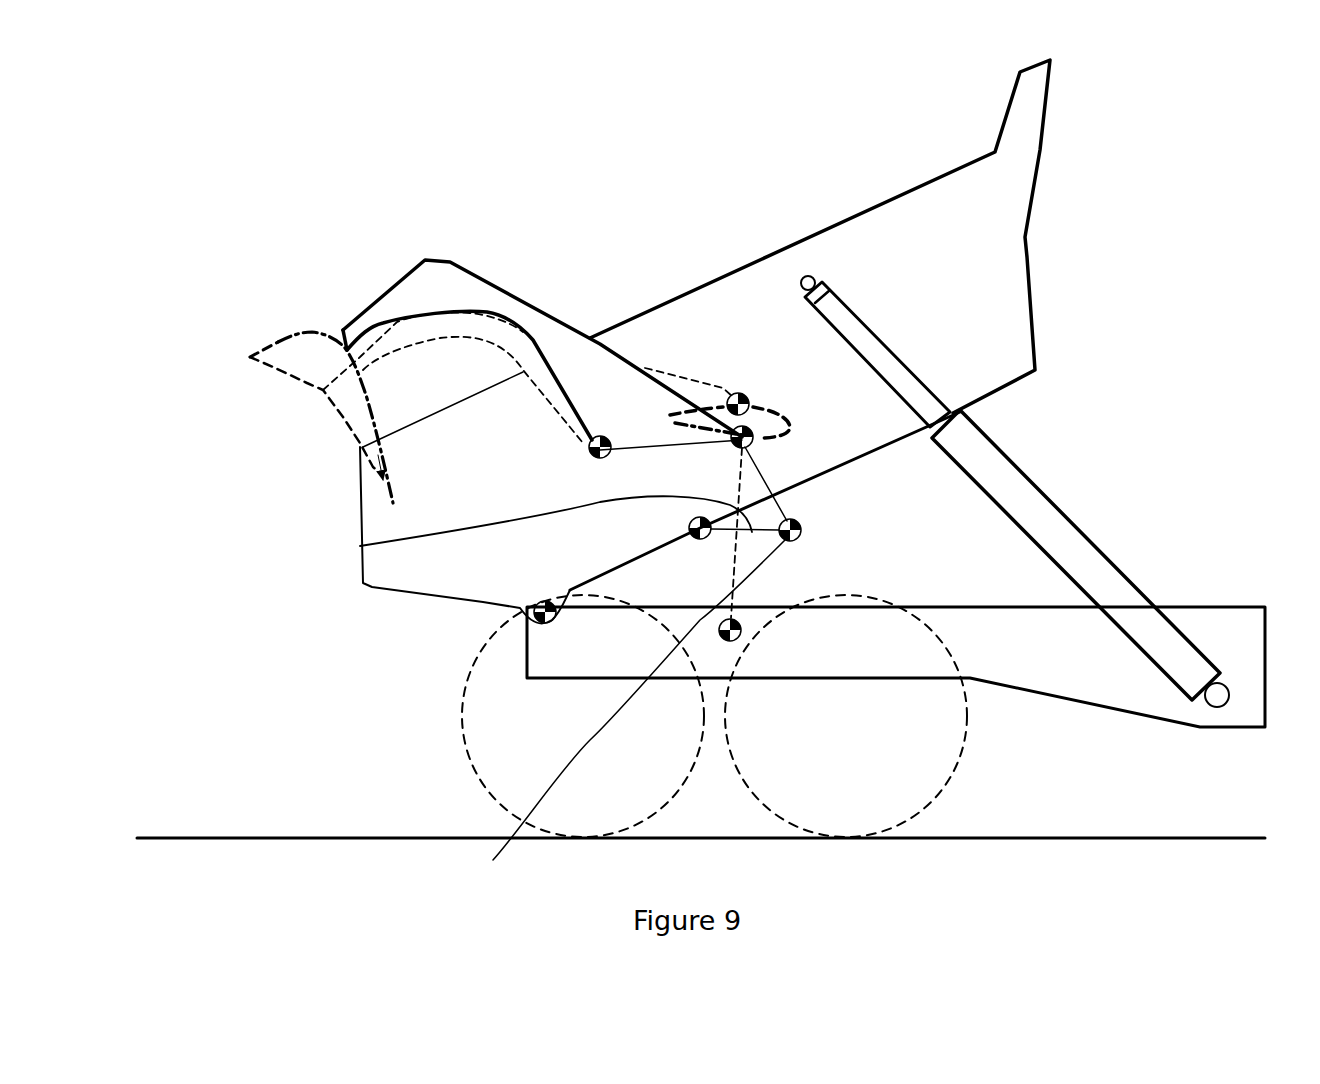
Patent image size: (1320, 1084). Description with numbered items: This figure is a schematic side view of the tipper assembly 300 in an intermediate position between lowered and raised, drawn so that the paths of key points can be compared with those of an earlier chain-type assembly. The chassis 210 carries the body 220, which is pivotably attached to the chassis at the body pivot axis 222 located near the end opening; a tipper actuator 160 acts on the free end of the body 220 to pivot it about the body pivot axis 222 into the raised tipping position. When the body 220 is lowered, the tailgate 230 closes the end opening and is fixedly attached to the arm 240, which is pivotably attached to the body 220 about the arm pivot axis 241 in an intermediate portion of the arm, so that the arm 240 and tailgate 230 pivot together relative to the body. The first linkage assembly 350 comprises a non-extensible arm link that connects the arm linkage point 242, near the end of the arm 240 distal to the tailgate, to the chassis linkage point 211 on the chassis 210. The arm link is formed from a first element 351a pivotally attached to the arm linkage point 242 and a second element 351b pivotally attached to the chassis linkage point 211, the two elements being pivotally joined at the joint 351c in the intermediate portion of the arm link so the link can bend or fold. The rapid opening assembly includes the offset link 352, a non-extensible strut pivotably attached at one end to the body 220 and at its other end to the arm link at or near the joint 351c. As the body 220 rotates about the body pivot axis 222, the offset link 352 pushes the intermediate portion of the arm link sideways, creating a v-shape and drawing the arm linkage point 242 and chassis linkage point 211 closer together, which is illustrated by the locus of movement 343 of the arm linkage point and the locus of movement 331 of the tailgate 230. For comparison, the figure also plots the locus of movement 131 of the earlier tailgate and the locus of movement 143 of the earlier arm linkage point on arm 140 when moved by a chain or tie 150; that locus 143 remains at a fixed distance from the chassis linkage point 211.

The tipper assembly 300 is at (263, 235).
The locus of movement of tailgate 131 is at (280, 340).
The locus of movement of tailgate 331 is at (322, 322).
The tailgate 230 is at (428, 272).
The arm 140 is at (443, 336).
The arm 240 is at (485, 303).
The arm pivot axis 241 is at (603, 434).
The locus of movement of arm linkage point 143 is at (772, 393).
The body 220 is at (990, 310).
The locus of movement of arm linkage point 343 is at (805, 420).
The arm linkage point 242 is at (800, 433).
The first element 351a is at (752, 442).
The joint 351c is at (711, 528).
The first linkage assembly 350 is at (765, 562).
The tipper actuator 160 is at (1067, 535).
The second element 351b is at (763, 574).
The offset link 352 is at (360, 546).
The body pivot axis 222 is at (543, 626).
The chain or tie 150 is at (627, 717).
The chassis linkage point 211 is at (727, 645).
The chassis 210 is at (1067, 653).